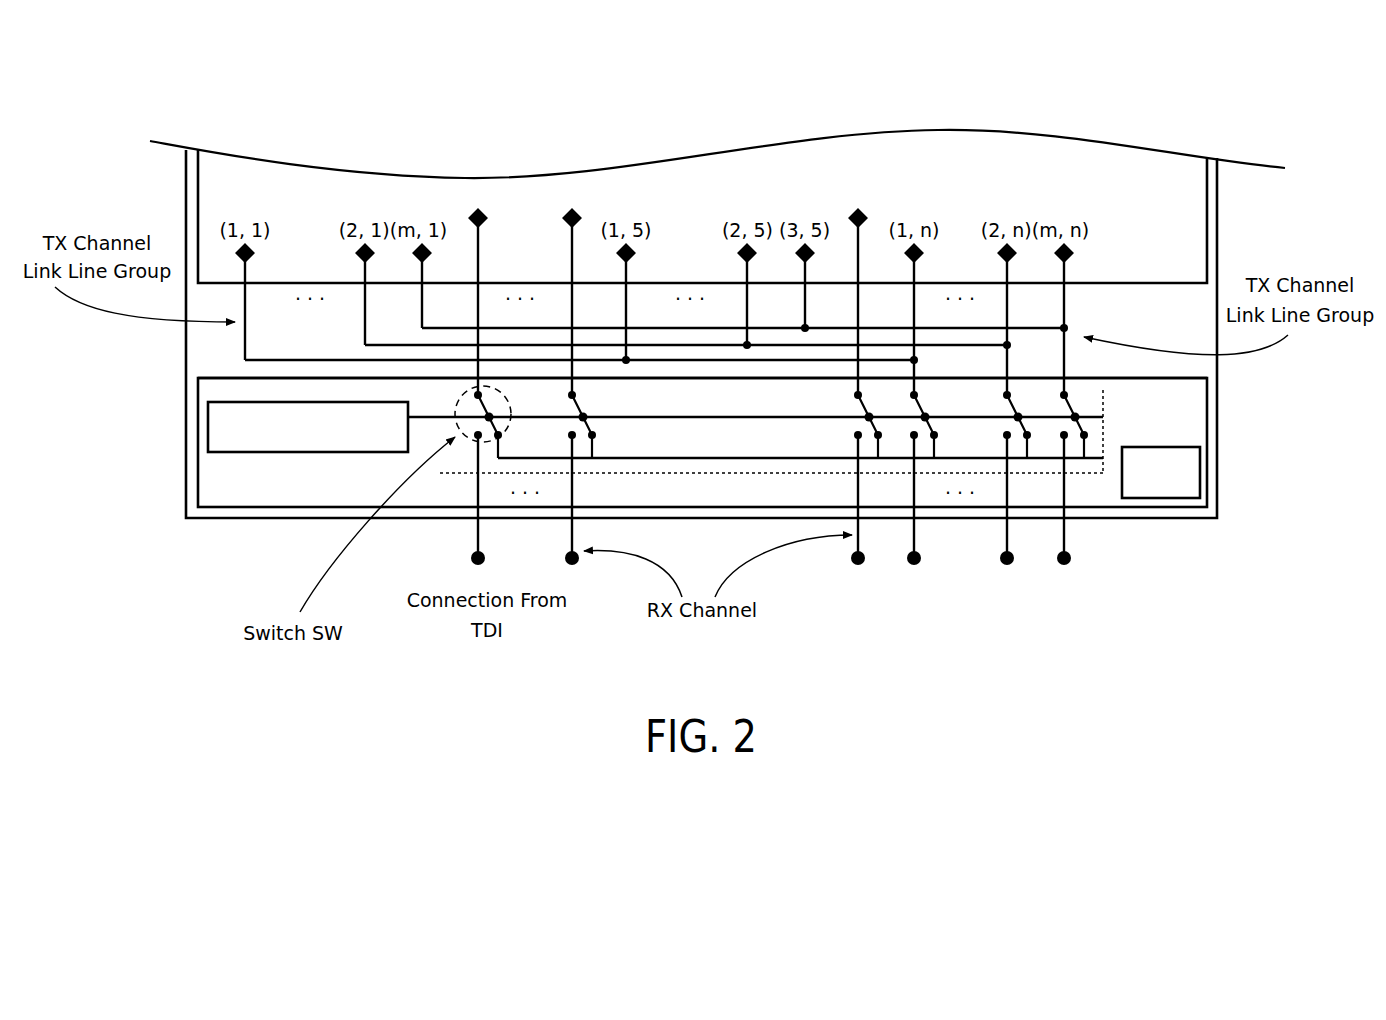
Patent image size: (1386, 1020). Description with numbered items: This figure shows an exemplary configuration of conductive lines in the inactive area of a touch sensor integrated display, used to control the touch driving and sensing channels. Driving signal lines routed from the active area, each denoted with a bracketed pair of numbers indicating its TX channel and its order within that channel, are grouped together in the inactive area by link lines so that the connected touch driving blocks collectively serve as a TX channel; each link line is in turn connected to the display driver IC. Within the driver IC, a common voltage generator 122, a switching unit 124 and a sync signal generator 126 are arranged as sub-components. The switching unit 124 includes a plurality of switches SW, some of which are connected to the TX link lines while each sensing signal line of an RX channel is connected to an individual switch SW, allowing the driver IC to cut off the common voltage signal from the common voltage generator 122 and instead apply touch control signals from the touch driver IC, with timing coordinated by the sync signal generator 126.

The common voltage generator 122 is at (265, 422).
The switching unit 124 is at (1112, 420).
The sync signal generator 126 is at (1162, 478).